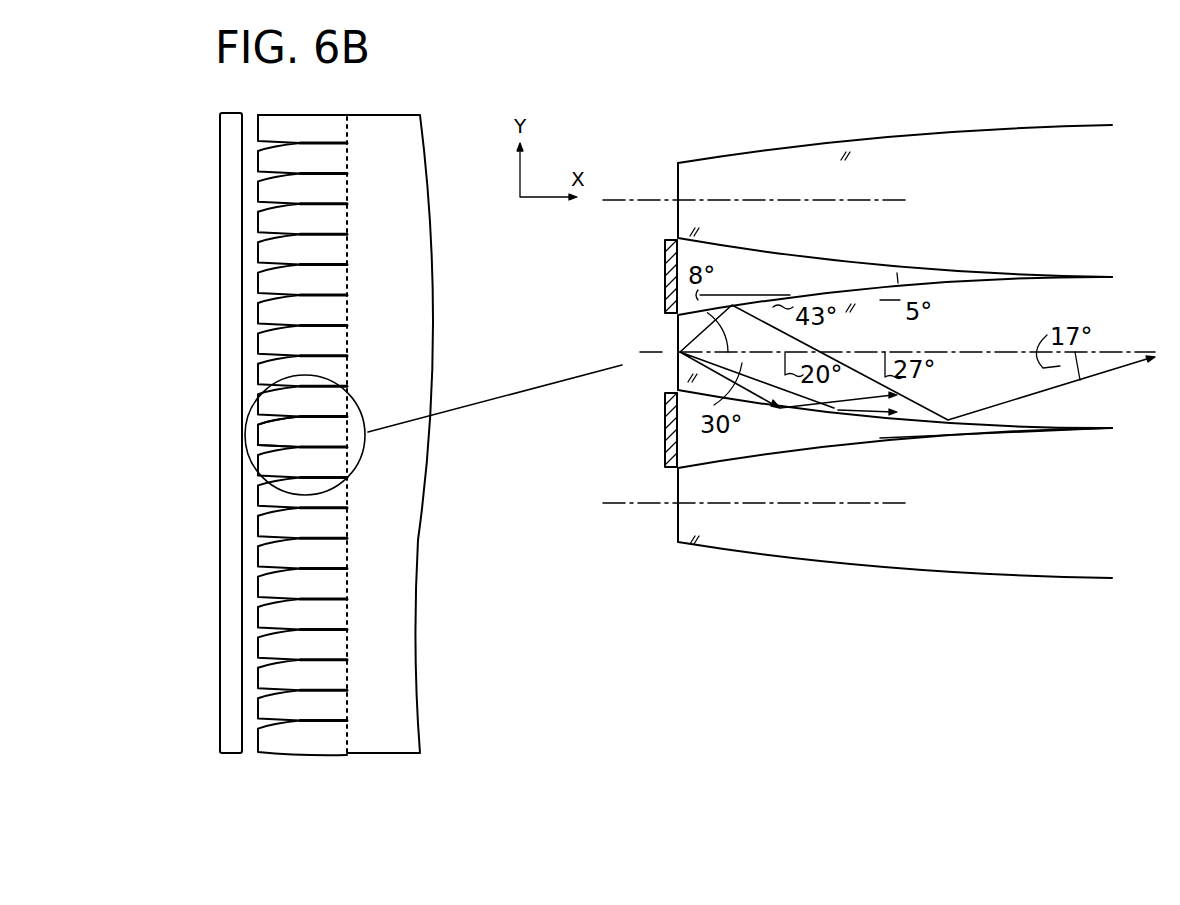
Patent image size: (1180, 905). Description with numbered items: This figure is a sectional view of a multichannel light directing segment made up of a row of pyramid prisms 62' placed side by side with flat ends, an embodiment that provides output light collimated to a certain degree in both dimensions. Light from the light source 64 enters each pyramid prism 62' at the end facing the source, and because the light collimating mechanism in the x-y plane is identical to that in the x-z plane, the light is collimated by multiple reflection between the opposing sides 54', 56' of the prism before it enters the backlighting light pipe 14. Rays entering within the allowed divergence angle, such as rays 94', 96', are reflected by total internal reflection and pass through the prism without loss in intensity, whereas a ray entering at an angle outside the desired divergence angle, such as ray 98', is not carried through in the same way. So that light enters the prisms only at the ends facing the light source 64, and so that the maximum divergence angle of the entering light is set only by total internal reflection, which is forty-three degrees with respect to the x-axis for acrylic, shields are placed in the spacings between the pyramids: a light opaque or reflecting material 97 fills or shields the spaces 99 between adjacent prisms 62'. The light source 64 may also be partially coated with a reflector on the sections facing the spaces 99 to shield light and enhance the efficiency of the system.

The light source 64 is at (232, 740).
The backlighting light pipe 14 is at (383, 585).
The opposing side of pyramid prism 54' is at (591, 323).
The opposing side of pyramid prism 56' is at (635, 478).
The pyramid prism 62' is at (895, 127).
The spaces 99 is at (722, 268).
The light opaque or reflecting material 97 is at (663, 438).
The light ray outside desired divergence angle 98' is at (854, 333).
The light ray within allowed divergence angle 96' is at (853, 404).
The light ray within allowed divergence angle 94' is at (917, 371).